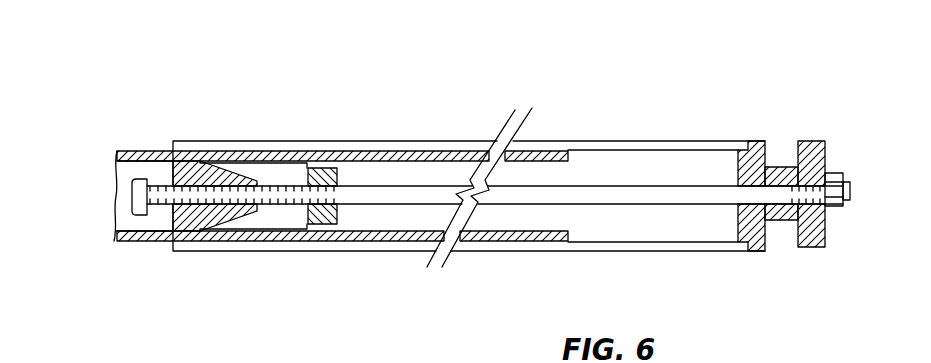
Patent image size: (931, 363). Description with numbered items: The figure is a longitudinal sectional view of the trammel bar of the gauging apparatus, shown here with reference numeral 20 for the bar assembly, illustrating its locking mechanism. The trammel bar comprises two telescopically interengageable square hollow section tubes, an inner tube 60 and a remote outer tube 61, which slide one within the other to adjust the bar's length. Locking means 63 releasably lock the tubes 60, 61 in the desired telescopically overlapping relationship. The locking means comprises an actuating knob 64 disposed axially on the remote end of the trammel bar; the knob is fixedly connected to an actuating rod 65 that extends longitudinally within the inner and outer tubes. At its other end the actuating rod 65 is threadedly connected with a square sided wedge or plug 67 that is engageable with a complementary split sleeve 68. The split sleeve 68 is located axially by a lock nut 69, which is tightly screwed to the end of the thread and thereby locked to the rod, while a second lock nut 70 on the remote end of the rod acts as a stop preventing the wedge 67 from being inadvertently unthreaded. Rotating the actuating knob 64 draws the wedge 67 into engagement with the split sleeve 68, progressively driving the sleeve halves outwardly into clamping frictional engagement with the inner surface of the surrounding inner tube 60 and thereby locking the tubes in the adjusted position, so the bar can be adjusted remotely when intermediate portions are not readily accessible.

The tubular support assembly 20 is at (292, 110).
The inner tube 60 is at (122, 243).
The outer tube 61 is at (223, 252).
The locking means 63 is at (314, 268).
The actuating knob 64 is at (826, 240).
The actuating rod 65 is at (622, 186).
The wedge 67 is at (155, 161).
The split sleeve 68 is at (260, 176).
The lock nut 69 is at (340, 172).
The second lock nut 70 is at (133, 190).